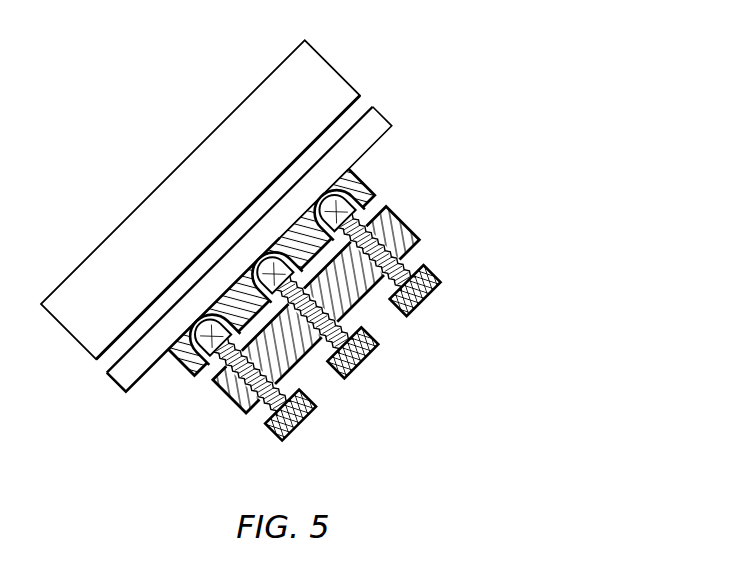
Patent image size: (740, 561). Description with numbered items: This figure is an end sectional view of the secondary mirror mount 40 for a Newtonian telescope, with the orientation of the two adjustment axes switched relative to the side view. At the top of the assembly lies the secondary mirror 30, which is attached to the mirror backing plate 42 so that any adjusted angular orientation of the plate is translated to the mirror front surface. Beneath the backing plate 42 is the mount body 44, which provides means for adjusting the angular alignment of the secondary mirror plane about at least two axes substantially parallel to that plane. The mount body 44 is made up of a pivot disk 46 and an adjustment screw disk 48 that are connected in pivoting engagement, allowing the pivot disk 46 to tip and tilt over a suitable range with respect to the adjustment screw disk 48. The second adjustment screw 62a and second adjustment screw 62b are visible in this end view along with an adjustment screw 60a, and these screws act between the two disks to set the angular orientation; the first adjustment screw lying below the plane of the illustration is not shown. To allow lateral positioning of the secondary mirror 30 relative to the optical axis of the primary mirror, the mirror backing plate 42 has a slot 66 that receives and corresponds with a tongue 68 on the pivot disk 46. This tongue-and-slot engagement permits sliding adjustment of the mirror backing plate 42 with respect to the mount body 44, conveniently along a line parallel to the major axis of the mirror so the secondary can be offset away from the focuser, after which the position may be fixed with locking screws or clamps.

The secondary mirror 30 is at (337, 65).
The secondary mirror mount 40 is at (453, 145).
The mirror backing plate 42 is at (387, 113).
The mount body 44 is at (203, 404).
The pivot disk 46 is at (365, 185).
The adjustment screw disk 48 is at (413, 233).
The first adjustment screw 60a is at (362, 362).
The second adjustment screw 62a is at (298, 428).
The second adjustment screw 62b is at (428, 300).
The slot 66 is at (243, 258).
The tongue 68 is at (258, 261).